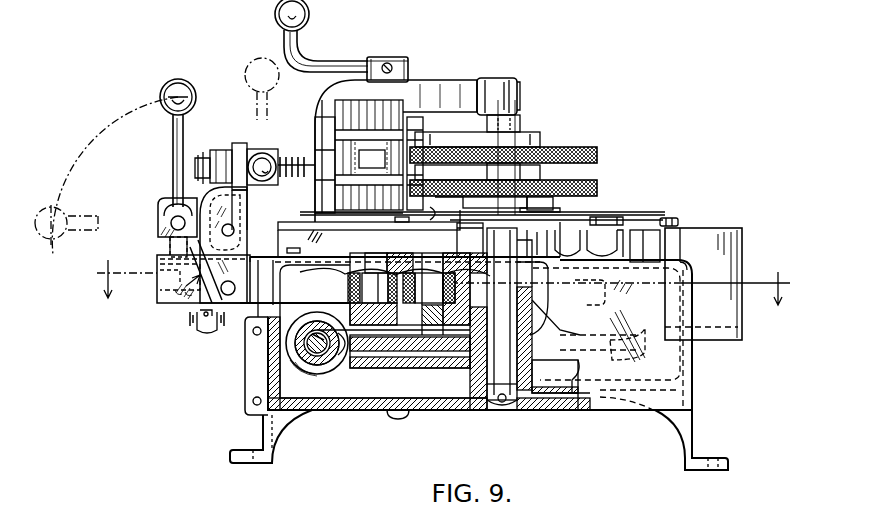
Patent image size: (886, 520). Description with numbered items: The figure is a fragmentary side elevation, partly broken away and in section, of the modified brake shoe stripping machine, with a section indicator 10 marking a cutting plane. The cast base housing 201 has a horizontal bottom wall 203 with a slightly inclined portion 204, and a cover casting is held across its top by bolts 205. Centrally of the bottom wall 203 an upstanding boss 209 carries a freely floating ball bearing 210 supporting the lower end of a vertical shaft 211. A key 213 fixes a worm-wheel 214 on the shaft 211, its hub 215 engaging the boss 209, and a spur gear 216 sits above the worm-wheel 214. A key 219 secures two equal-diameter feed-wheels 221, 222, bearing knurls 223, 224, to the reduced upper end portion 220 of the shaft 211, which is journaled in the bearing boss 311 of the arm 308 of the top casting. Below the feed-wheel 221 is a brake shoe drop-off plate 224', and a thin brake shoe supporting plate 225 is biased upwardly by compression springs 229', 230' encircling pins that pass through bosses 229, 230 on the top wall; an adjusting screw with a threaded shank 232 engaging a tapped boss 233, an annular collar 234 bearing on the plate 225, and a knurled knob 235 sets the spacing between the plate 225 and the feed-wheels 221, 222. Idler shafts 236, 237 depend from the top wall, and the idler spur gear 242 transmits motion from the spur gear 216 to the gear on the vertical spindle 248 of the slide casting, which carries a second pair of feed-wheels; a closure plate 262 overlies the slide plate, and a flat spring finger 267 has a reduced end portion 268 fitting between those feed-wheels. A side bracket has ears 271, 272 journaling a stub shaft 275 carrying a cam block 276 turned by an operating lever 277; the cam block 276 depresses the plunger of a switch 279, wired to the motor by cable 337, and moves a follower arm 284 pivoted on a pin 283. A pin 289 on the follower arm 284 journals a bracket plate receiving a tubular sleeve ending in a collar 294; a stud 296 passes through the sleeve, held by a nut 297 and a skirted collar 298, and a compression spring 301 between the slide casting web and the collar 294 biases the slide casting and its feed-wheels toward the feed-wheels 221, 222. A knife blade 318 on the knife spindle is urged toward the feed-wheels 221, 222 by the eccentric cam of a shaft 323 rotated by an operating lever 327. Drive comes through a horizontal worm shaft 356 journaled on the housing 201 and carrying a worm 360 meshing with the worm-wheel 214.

The section line 10 is at (443, 273).
The cast base housing 201 is at (708, 412).
The bottom wall 203 is at (372, 411).
The inclined portion 204 is at (572, 410).
The bolts 205 is at (676, 218).
The upstanding boss 209 is at (470, 370).
The ball bearing 210 is at (503, 402).
The vertical shaft 211 is at (492, 402).
The key 213 is at (540, 325).
The worm-wheel 214 is at (414, 368).
The hub 215 is at (540, 368).
The spur gear 216 is at (598, 312).
The key 219 is at (520, 124).
The reduced upper end portion 220 is at (505, 78).
The feed-wheel 221 is at (590, 182).
The feed-wheel 222 is at (580, 148).
The peripheral serrations or knurls 223 is at (598, 196).
The peripheral serrations or knurls 224 is at (525, 153).
The brake shoe drop-off plate 224' is at (722, 268).
The brake shoe supporting plate 225 is at (628, 214).
The apertured upstanding boss 229 is at (419, 237).
The compression spring 229' is at (446, 207).
The apertured upstanding boss 230 is at (636, 246).
The compression spring 230' is at (627, 217).
The threaded shank 232 is at (539, 238).
The boss 233 is at (555, 258).
The annular collar 234 is at (545, 210).
The knurled knob 235 is at (522, 205).
The idler shaft 236 is at (383, 254).
The idler shaft 237 is at (432, 336).
The idler spur gear 242 is at (348, 292).
The vertical spindle 248 is at (355, 100).
The closure plate 262 is at (302, 173).
The flat spring finger 267 is at (318, 121).
The reduced end portion 268 is at (385, 164).
The ear 271 is at (165, 205).
The ear 272 is at (171, 223).
The stub shaft 275 is at (165, 210).
The cam block 276 is at (170, 198).
The operating lever 277 is at (173, 132).
The switch 279 is at (167, 295).
The pin 283 is at (228, 295).
The follower arm 284 is at (193, 310).
The pin 289 is at (234, 230).
The collar 294 is at (255, 187).
The stud 296 is at (196, 166).
The nut 297 is at (208, 150).
The skirted collar 298 is at (220, 145).
The compression spring 301 is at (298, 150).
The arm 308 is at (435, 80).
The bearing boss 311 is at (521, 92).
The knife blade 318 is at (418, 130).
The shaft 323 is at (385, 57).
The operating lever 327 is at (304, 50).
The cable 337 is at (203, 330).
The worm shaft 356 is at (300, 362).
The worm 360 is at (292, 352).